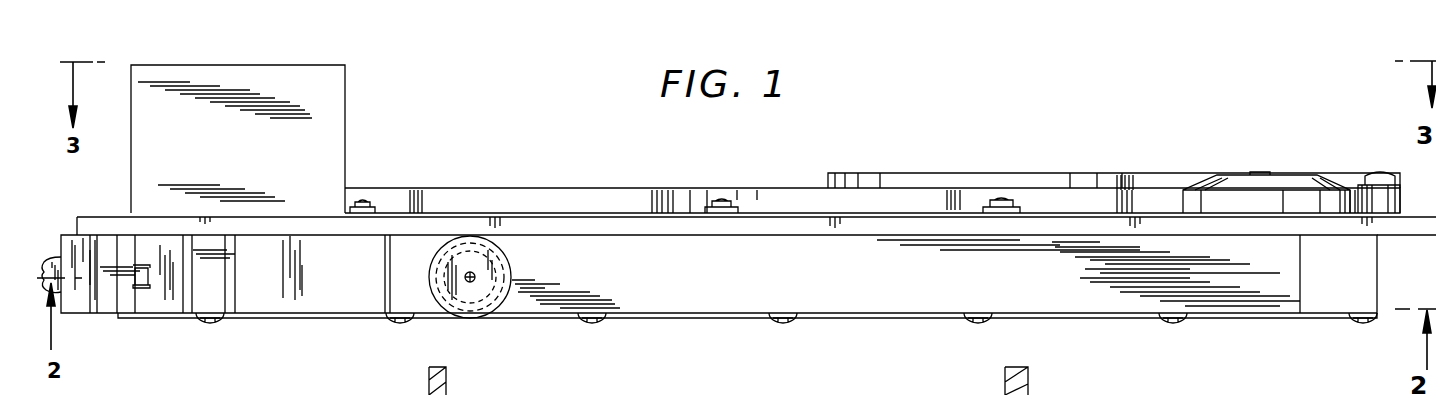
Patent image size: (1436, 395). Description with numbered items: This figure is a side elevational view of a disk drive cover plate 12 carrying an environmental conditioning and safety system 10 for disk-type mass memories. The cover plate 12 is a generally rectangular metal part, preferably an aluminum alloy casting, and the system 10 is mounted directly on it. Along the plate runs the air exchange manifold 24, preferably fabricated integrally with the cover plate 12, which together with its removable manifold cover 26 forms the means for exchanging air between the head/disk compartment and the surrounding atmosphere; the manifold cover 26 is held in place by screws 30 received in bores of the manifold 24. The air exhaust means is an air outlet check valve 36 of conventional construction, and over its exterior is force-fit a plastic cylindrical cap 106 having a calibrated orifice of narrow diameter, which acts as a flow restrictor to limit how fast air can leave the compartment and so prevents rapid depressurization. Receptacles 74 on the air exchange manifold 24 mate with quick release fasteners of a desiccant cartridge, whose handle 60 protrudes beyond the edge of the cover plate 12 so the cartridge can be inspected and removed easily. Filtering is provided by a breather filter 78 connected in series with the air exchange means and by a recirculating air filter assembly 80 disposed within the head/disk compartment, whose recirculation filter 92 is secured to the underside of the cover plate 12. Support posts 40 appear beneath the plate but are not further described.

The environmental conditioning and safety system 10 is at (280, 327).
The cover plate 12 is at (103, 222).
The air exchange manifold 24 is at (723, 302).
The manifold cover 26 is at (895, 313).
The screws 30 is at (590, 323).
The air outlet check valve 36 is at (512, 252).
The support post 40 is at (446, 393).
The handle 60 is at (56, 258).
The receptacles 74 is at (143, 291).
The breather filter 78 is at (1243, 162).
The recirculating air filter assembly 80 is at (670, 158).
The recirculation filter 92 is at (345, 145).
The cylindrical cap 106 is at (430, 283).